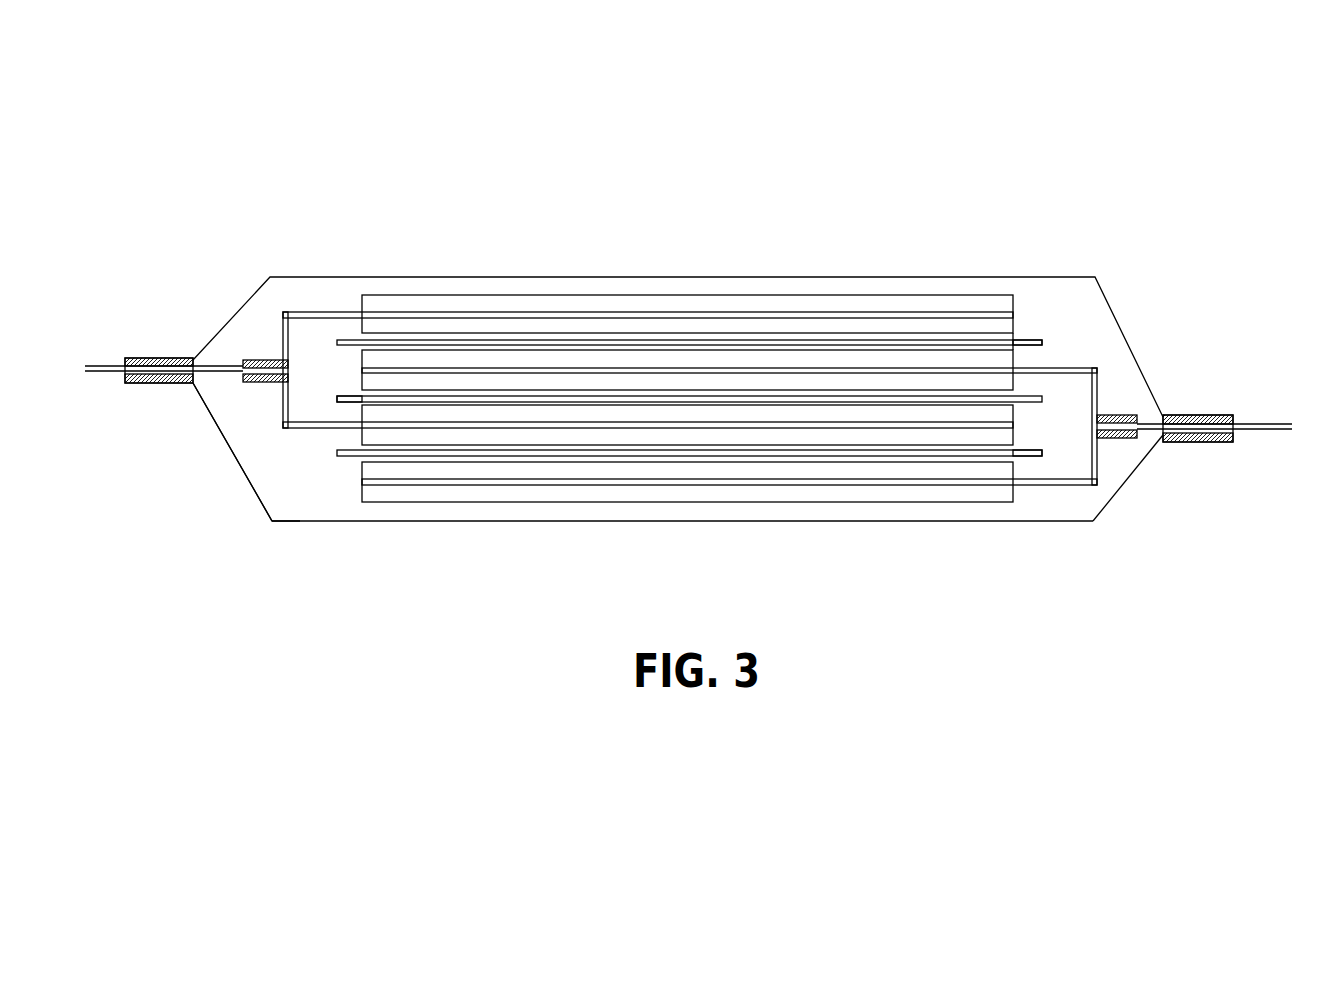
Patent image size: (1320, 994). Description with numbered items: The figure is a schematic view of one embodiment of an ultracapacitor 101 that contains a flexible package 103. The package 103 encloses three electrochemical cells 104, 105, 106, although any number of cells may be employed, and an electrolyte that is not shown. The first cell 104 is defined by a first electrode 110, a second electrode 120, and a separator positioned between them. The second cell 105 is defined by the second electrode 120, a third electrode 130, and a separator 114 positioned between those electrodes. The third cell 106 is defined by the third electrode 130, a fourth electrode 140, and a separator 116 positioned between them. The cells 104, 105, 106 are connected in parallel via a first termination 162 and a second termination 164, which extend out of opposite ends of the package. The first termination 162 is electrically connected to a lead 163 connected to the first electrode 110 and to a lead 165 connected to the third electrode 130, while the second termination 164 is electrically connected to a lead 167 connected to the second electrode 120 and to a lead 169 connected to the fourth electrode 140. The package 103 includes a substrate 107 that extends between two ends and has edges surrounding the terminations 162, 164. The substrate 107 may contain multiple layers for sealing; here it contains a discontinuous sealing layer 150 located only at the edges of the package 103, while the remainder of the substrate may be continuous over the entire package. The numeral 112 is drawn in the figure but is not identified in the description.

The ultracapacitor 101 is at (672, 133).
The flexible package 103 is at (267, 508).
The first electrochemical cell 104 is at (460, 340).
The second electrochemical cell 105 is at (635, 395).
The third electrochemical cell 106 is at (822, 450).
The substrate 107 is at (443, 522).
The first electrode 110 is at (952, 293).
The electrode tab 112 is at (1035, 340).
The separator 114 is at (350, 400).
The separator 116 is at (1043, 456).
The second electrode 120 is at (1015, 353).
The third electrode 130 is at (590, 448).
The fourth electrode 140 is at (958, 503).
The discontinuous sealing layer 150 is at (153, 382).
The first termination 162 is at (95, 368).
The lead 163 is at (302, 315).
The second termination 164 is at (1275, 423).
The lead 165 is at (317, 427).
The lead 167 is at (1097, 392).
The lead 169 is at (1097, 482).